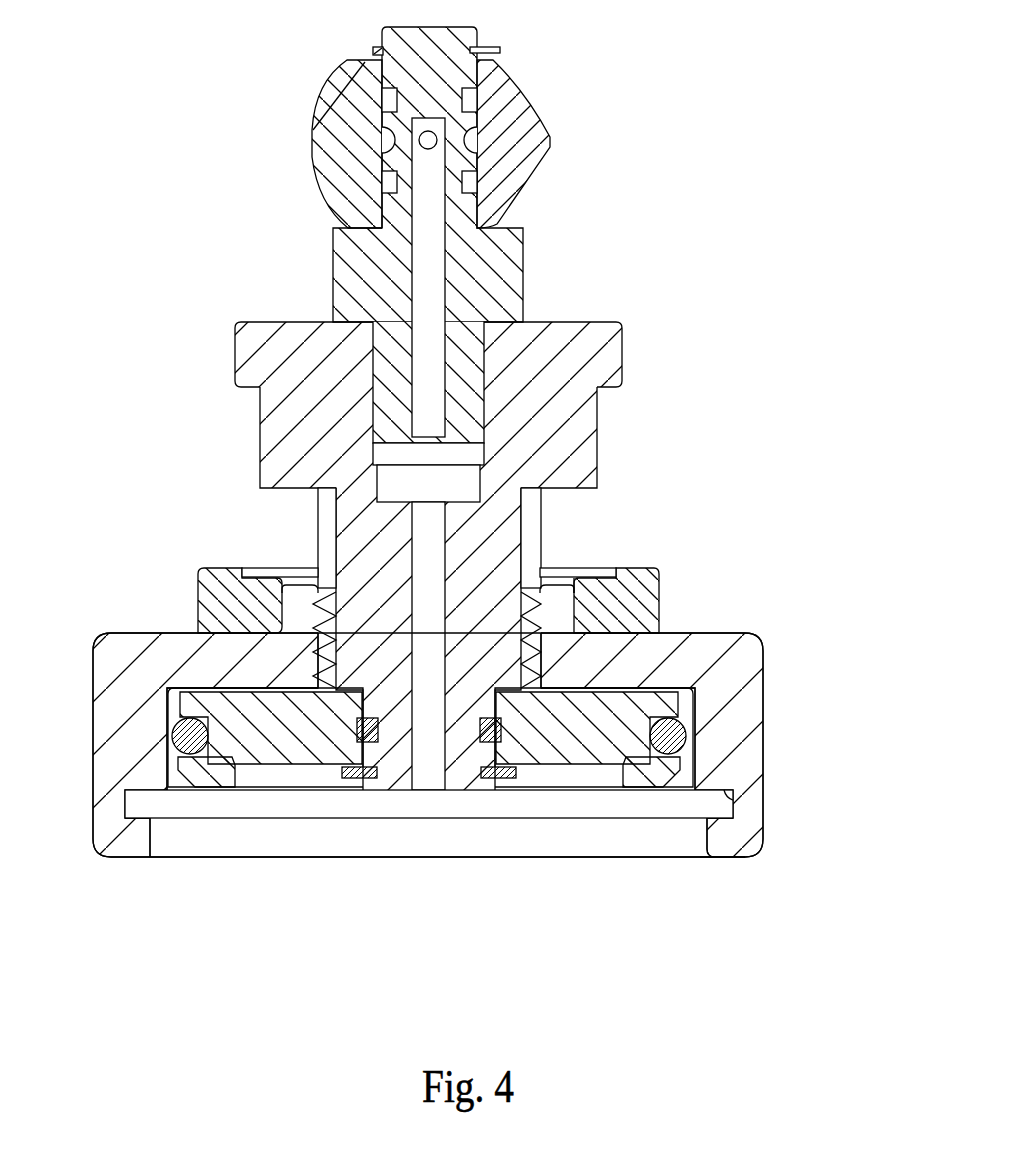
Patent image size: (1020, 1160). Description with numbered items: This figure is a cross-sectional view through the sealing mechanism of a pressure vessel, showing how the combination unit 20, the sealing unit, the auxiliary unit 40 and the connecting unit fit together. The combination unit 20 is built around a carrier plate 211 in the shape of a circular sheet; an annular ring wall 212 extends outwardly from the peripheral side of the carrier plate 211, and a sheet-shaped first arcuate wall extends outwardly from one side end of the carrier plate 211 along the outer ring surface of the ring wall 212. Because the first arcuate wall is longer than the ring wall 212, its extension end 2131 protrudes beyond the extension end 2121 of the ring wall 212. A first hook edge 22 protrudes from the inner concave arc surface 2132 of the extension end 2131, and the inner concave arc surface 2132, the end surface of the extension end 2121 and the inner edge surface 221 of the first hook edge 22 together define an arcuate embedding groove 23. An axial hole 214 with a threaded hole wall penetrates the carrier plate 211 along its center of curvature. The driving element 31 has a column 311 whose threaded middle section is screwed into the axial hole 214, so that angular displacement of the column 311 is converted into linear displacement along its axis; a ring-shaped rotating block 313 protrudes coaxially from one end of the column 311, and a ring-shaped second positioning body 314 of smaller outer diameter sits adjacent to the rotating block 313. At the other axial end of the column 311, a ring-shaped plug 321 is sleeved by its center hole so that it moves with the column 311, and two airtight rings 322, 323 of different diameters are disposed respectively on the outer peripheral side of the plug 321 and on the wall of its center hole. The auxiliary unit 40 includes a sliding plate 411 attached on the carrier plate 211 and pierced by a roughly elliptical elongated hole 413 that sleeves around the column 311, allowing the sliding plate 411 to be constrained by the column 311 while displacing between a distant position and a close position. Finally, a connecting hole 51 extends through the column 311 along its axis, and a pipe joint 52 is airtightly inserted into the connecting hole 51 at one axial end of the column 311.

The combination unit 20 is at (782, 676).
The carrier plate 211 is at (172, 632).
The ring wall 212 is at (700, 716).
The extension end of the ring wall 2121 is at (720, 780).
The extension end of the first arcuate wall 2131 is at (752, 855).
The inner concave arc surface 2132 is at (724, 792).
The first hook edge 22 is at (703, 837).
The inner edge surface of the first hook edge 221 is at (753, 848).
The embedding groove 23 is at (717, 803).
The driving element 31 is at (393, 762).
The column 311 is at (310, 314).
The rotating block 313 is at (628, 355).
The second positioning body 314 is at (600, 442).
The plug 321 is at (270, 752).
The airtight ring 322 is at (640, 740).
The airtight ring 323 is at (478, 722).
The auxiliary unit 40 is at (672, 596).
The sliding plate 411 is at (223, 595).
The elongated hole 413 is at (283, 587).
The axial hole 214 is at (573, 585).
The connecting hole 51 is at (433, 530).
The pipe joint 52 is at (508, 255).